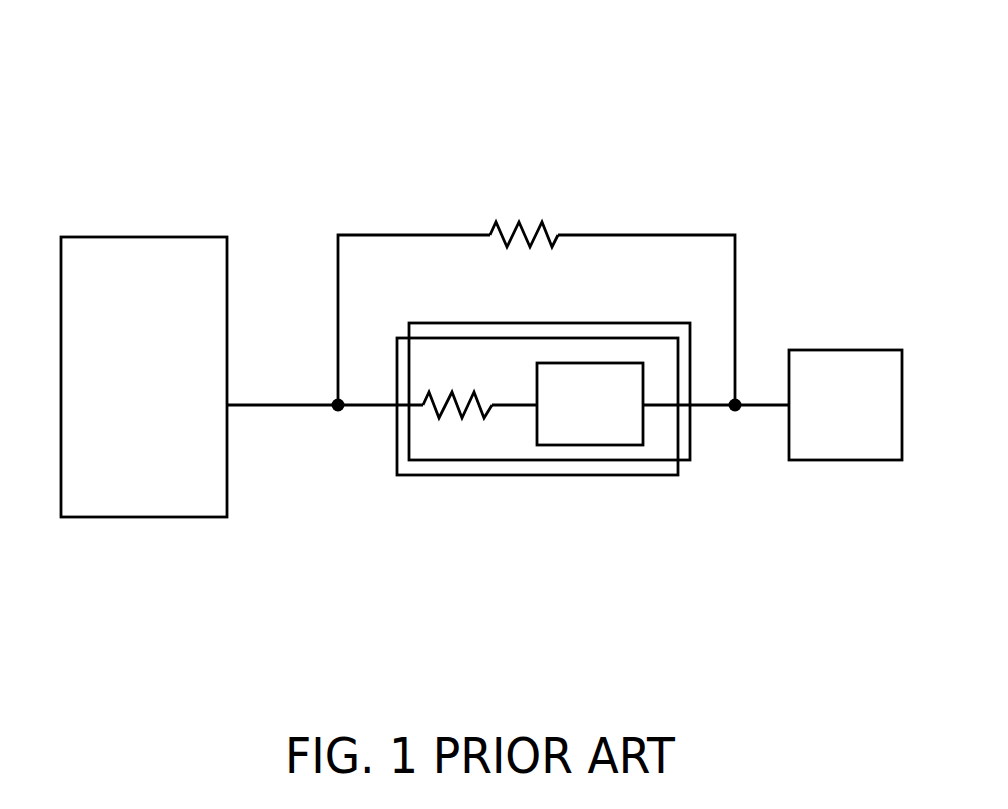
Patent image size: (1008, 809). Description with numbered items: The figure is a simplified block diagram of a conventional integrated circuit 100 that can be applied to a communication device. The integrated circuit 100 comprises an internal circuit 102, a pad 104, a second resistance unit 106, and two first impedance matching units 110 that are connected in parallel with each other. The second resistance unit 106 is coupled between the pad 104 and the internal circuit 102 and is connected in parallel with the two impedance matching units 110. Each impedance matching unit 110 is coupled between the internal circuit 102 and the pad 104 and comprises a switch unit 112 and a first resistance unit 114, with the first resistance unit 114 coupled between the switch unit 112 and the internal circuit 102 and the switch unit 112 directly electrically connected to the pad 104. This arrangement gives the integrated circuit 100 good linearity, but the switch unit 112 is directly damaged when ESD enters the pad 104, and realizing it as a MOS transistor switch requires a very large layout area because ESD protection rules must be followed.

The integrated circuit 100 is at (748, 88).
The internal circuit 102 is at (141, 237).
The pad 104 is at (845, 350).
The second resistance unit 106 is at (527, 222).
The first impedance matching unit 110 is at (556, 338).
The switch unit 112 is at (592, 446).
The first resistance unit 114 is at (452, 420).